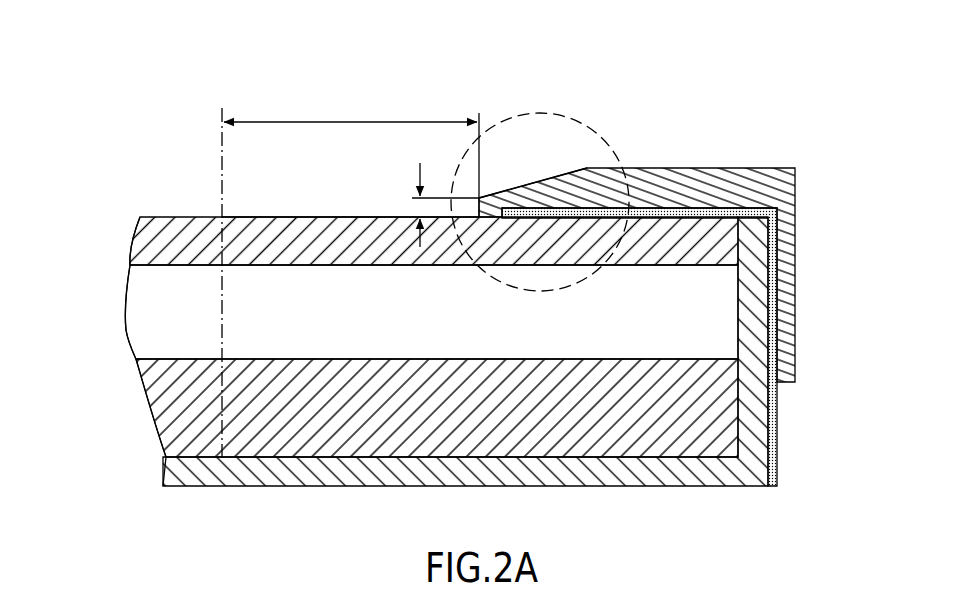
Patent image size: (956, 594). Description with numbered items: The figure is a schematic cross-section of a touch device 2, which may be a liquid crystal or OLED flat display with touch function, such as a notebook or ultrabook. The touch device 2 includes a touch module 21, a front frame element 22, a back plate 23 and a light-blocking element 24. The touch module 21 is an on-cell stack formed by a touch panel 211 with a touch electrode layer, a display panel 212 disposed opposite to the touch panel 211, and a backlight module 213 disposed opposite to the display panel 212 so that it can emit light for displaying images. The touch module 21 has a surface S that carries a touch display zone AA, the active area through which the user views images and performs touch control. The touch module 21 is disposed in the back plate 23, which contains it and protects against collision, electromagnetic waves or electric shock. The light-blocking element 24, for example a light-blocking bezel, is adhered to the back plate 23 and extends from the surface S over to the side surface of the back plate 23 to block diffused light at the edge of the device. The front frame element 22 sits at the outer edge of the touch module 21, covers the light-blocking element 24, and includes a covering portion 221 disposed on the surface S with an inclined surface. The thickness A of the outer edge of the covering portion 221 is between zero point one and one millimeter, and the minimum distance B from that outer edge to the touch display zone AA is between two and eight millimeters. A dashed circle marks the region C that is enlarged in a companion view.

The touch device 2 is at (193, 56).
The touch module 21 is at (138, 215).
The touch panel 211 is at (161, 244).
The display panel 212 is at (127, 340).
The backlight module 213 is at (183, 418).
The front frame element 22 is at (787, 260).
The covering portion 221 is at (518, 197).
The back plate 23 is at (598, 480).
The light-blocking element 24 is at (778, 468).
The touch display zone AA is at (197, 215).
The surface S is at (260, 217).
The thickness A is at (438, 205).
The minimum distance B is at (351, 156).
The region C is at (603, 135).